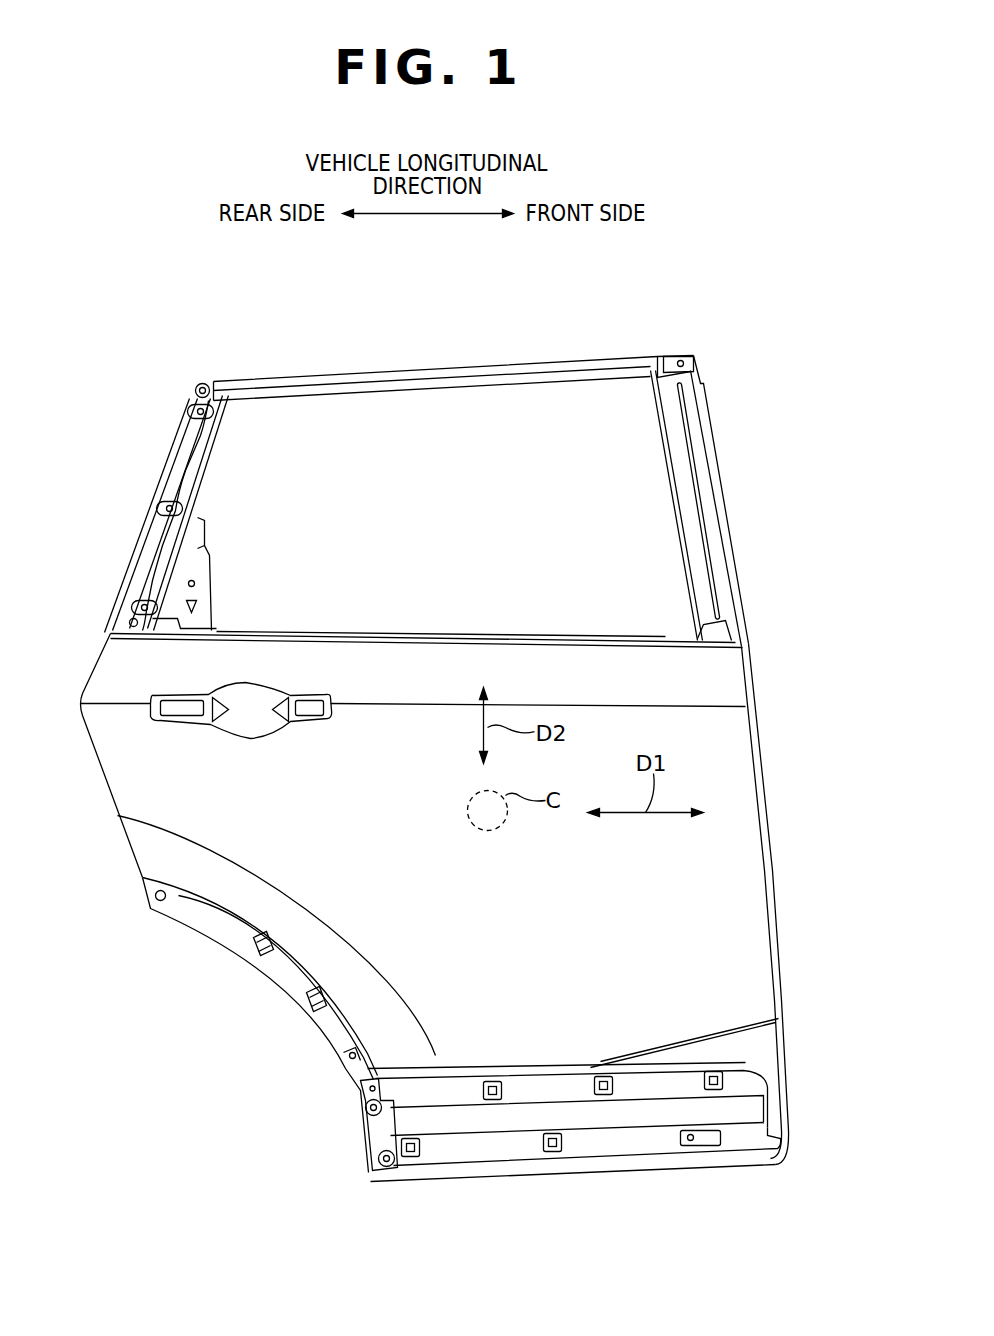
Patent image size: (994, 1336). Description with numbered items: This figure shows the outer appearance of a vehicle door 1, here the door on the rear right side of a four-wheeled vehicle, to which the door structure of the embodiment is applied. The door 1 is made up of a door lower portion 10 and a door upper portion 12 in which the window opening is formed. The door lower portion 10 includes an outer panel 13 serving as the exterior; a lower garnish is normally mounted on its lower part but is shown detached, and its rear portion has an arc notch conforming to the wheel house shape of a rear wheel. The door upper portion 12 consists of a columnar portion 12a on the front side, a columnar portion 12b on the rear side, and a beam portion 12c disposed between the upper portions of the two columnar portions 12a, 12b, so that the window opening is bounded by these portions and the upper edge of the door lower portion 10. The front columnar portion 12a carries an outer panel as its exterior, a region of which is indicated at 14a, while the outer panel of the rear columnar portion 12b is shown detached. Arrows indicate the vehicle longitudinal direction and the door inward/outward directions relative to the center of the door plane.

The vehicle door 1 is at (717, 293).
The door lower portion 10 is at (248, 991).
The door upper portion 12 is at (163, 428).
The columnar portion 12a is at (717, 443).
The columnar portion 12b is at (158, 491).
The beam portion 12c is at (420, 360).
The outer panel 13 is at (730, 733).
The slot of front pillar 14a is at (718, 528).